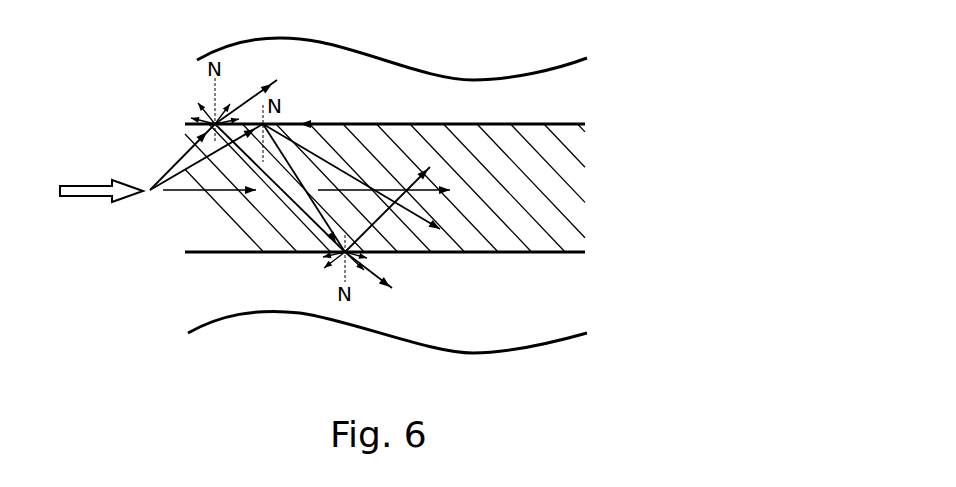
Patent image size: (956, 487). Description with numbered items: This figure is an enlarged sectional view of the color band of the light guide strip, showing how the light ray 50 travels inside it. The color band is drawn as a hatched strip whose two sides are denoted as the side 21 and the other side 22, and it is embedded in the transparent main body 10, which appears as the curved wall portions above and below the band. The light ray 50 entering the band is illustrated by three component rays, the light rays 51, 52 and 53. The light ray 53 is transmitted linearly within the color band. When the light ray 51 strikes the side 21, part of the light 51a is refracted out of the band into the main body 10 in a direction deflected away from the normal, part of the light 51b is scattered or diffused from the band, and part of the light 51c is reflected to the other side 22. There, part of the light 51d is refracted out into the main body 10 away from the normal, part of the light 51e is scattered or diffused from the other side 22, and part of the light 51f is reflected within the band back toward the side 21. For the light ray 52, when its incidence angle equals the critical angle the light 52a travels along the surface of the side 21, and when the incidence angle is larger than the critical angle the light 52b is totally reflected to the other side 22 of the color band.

The main body 10 is at (547, 87).
The side of the color band 21 is at (418, 123).
The other side of the color band 22 is at (490, 253).
The light ray 50 is at (88, 200).
The light ray 51 is at (173, 163).
The refracted light 51a is at (247, 98).
The scattered light 51b is at (207, 110).
The reflected light 51c is at (296, 205).
The refracted light 51d is at (368, 272).
The scattered light 51e is at (335, 262).
The reflected light 51f is at (415, 252).
The light ray 52 is at (157, 187).
The surface-traveling light 52a is at (297, 122).
The totally reflected light 52b is at (332, 162).
The light ray 53 is at (433, 182).